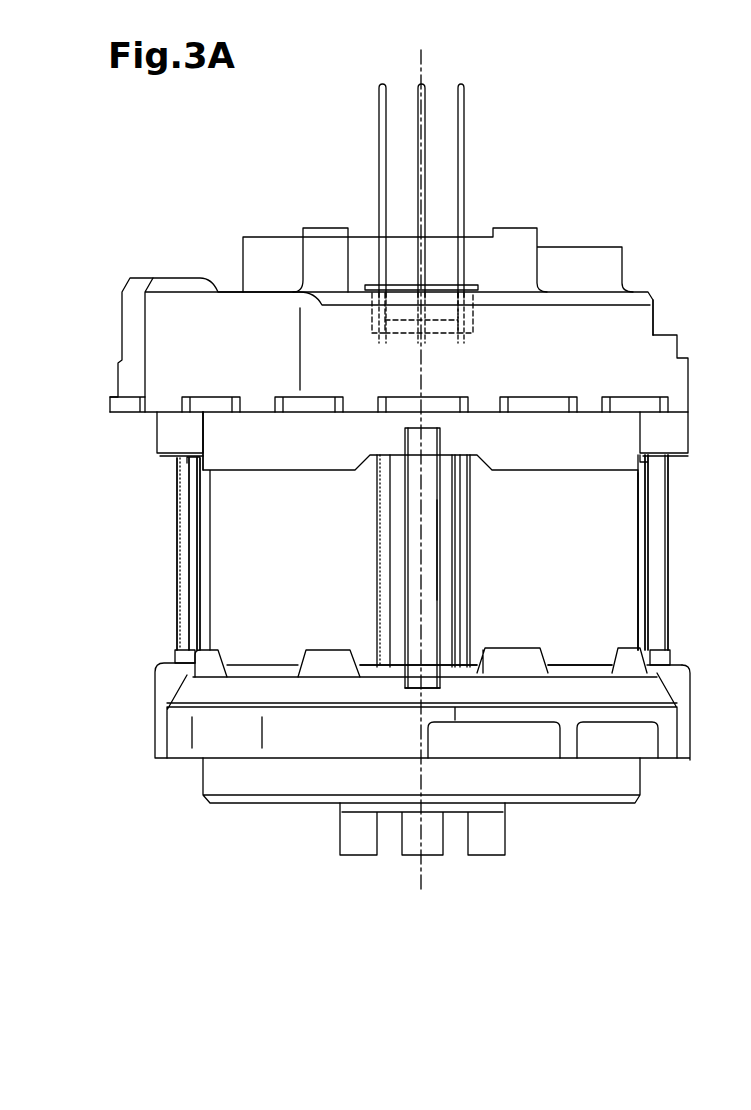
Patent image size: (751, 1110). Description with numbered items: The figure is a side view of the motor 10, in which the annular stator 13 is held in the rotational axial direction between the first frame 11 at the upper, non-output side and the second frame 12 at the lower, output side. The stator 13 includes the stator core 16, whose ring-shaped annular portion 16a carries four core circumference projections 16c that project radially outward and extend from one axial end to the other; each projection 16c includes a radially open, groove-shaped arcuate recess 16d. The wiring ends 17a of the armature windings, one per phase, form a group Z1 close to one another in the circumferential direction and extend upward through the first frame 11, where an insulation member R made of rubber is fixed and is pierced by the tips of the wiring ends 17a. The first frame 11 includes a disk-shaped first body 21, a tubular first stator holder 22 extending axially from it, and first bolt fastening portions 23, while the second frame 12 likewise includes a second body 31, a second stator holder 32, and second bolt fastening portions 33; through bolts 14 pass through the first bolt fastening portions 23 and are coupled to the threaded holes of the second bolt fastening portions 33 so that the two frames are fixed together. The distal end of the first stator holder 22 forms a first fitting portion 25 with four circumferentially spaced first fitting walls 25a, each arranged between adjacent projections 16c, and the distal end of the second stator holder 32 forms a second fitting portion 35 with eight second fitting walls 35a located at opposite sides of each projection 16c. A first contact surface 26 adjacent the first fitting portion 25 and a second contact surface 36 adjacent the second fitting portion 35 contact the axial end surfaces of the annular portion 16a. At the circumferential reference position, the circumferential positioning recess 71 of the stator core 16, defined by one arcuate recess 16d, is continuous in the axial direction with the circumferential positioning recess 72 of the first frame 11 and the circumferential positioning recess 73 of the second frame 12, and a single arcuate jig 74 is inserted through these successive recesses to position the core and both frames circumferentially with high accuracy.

The motor 10 is at (192, 186).
The first frame 11 is at (170, 278).
The second frame 12 is at (240, 805).
The stator 13 is at (648, 545).
The through bolt 14 is at (183, 593).
The stator core 16 is at (195, 548).
The annular portion 16a is at (628, 592).
The core circumference projection 16c is at (199, 495).
The arcuate recess 16d is at (410, 568).
The wiring end 17a is at (370, 313).
The first body 21 is at (655, 318).
The first stator holder 22 is at (485, 416).
The first bolt fastening portion 23 is at (162, 432).
The first fitting portion 25 is at (237, 474).
The first fitting wall 25a is at (320, 470).
The first contact surface 26 is at (450, 472).
The second body 31 is at (668, 757).
The second stator holder 32 is at (338, 697).
The second bolt fastening portion 33 is at (165, 688).
The second fitting portion 35 is at (342, 648).
The second fitting wall 35a is at (233, 649).
The second contact surface 36 is at (572, 660).
The circumferential positioning recess 71 is at (430, 512).
The circumferential positioning recess 72 is at (440, 438).
The circumferential positioning recess 73 is at (440, 680).
The jig 74 is at (437, 545).
The insulation member R is at (410, 284).
The group Z1 is at (473, 285).